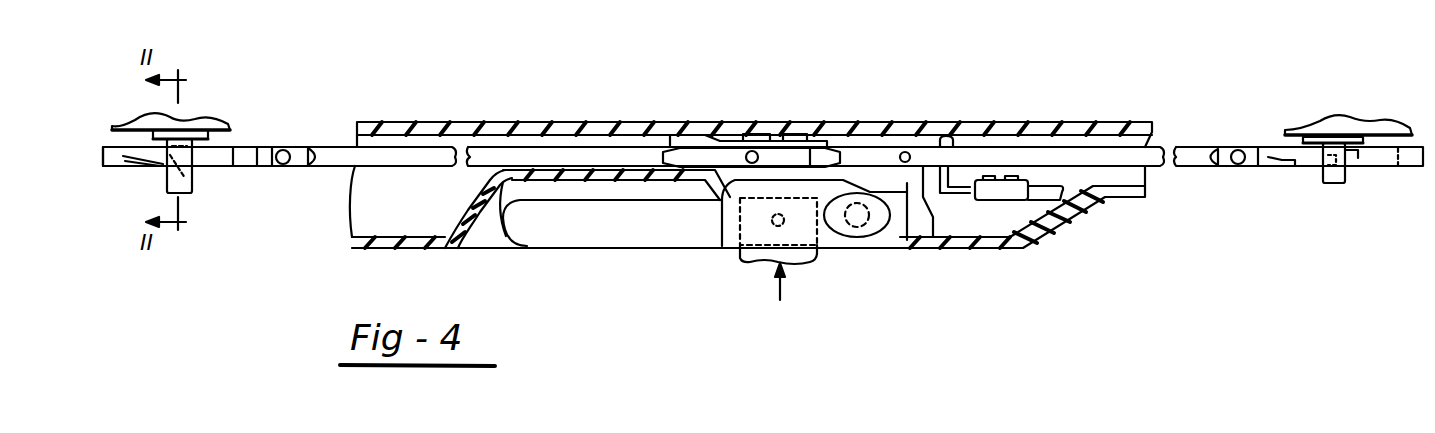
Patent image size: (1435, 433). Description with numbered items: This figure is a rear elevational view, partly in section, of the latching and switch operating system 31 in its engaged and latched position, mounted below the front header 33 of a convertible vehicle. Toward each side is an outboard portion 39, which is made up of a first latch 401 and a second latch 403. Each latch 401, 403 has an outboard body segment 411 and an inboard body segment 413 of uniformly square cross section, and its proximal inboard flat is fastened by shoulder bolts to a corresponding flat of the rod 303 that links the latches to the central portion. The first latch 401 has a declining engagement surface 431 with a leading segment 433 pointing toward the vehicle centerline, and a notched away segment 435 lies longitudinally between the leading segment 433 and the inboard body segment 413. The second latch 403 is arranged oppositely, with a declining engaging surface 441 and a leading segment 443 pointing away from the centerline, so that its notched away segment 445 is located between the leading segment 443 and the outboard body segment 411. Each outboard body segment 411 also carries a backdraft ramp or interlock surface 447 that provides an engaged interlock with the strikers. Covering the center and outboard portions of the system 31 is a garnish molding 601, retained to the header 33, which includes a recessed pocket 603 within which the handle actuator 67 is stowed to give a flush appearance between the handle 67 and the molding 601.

The latching and switch operating system 31 is at (797, 92).
The front header 33 is at (930, 122).
The outboard portion 39 is at (240, 90).
The handle actuator 67 is at (657, 233).
The rod 303 is at (345, 142).
The first latch 401 is at (131, 176).
The second latch 403 is at (1287, 178).
The outboard body segment 411 is at (137, 130).
The inboard body segment 413 is at (270, 153).
The declining engagement surface 431 is at (195, 180).
The leading segment 433 is at (193, 150).
The notched away segment 435 is at (220, 155).
The declining engaging surface 441 is at (1335, 183).
The leading segment 443 is at (1356, 156).
The notched away segment 445 is at (1362, 158).
The backdraft ramp or interlock surface 447 is at (140, 163).
The garnish molding 601 is at (430, 244).
The recessed pocket 603 is at (503, 212).